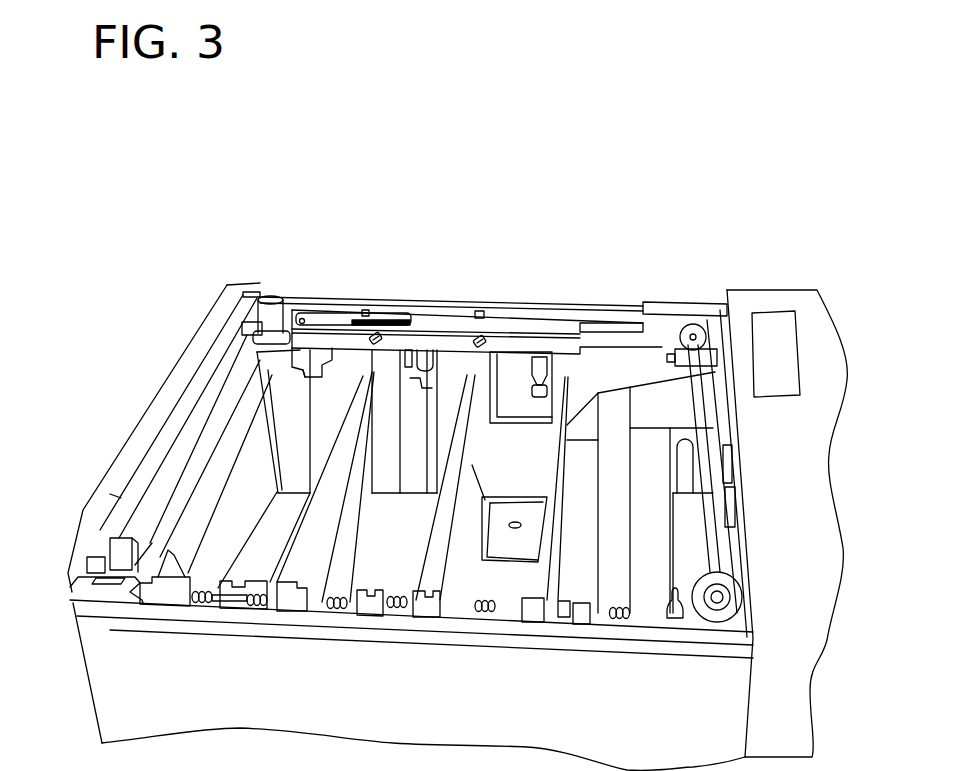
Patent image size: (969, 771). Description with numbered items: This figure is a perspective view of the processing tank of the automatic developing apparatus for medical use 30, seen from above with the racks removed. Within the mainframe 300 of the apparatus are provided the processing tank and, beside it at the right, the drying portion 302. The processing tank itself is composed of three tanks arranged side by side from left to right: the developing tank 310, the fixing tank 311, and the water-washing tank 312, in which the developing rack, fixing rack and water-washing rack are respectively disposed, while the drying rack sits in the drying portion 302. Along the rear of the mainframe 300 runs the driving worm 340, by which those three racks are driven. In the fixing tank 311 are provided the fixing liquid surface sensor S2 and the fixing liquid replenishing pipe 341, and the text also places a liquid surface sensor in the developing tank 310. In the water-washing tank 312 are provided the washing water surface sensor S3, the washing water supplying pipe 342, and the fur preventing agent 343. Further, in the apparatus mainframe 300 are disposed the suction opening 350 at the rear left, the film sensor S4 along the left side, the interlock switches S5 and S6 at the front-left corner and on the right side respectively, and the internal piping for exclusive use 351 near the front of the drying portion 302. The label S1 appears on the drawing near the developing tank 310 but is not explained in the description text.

The automatic developing apparatus for medical use 30 is at (342, 181).
The mainframe 300 is at (608, 287).
The drying portion 302 is at (653, 378).
The developing tank 310 is at (205, 600).
The fixing tank 311 is at (379, 595).
The water-washing tank 312 is at (506, 602).
The driving worm 340 is at (343, 350).
The fixing liquid replenishing pipe 341 is at (388, 326).
The washing water supplying pipe 342 is at (372, 334).
The fur preventing agent 343 is at (504, 498).
The suction opening 350 is at (268, 296).
The internal piping for exclusive use 351 is at (675, 620).
The sensor S1 is at (330, 389).
The fixing liquid surface sensor S2 is at (440, 350).
The washing water surface sensor S3 is at (533, 388).
The film sensor S4 is at (185, 443).
The interlock switch S5 is at (72, 586).
The interlock switch S6 is at (727, 455).